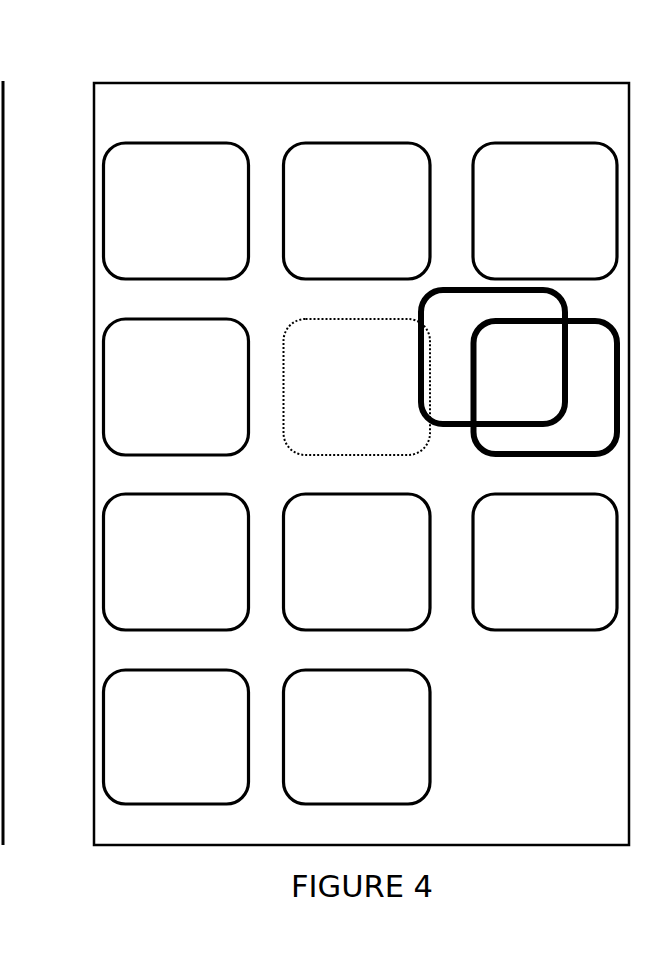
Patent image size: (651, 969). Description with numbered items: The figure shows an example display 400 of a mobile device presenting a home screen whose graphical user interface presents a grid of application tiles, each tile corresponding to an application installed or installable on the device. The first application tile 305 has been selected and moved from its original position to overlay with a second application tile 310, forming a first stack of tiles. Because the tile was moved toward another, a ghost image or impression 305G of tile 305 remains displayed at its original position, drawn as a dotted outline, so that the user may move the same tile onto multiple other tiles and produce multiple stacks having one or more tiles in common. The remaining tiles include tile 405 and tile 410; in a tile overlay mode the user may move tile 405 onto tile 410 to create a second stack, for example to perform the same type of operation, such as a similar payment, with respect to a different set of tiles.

The display 400 is at (363, 83).
The tile 310 is at (3, 280).
The ghost image 305G is at (305, 318).
The tile 305 is at (420, 411).
The tile 405 is at (283, 622).
The tile 410 is at (177, 804).